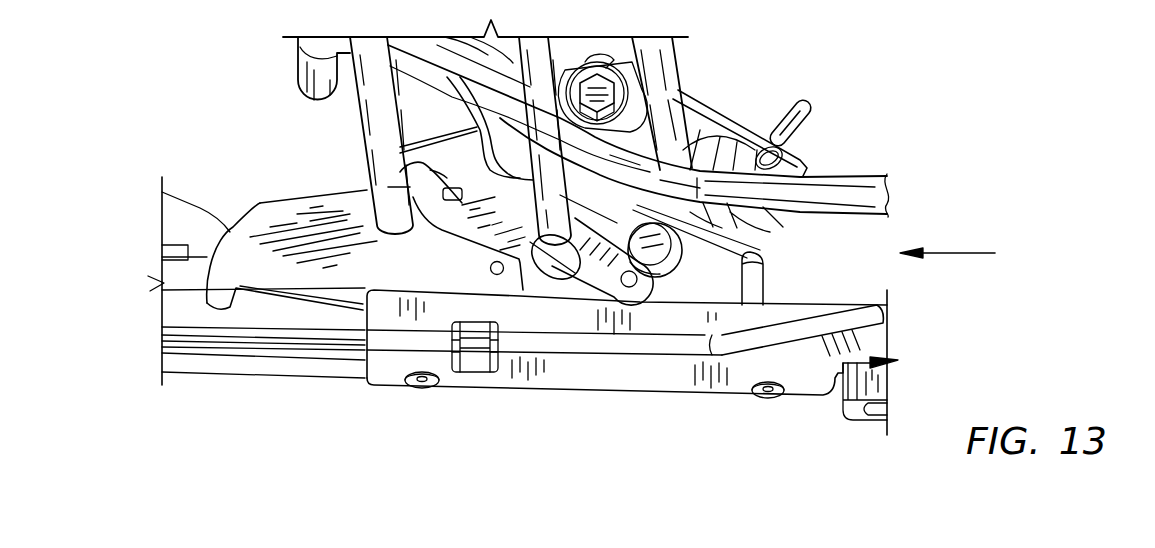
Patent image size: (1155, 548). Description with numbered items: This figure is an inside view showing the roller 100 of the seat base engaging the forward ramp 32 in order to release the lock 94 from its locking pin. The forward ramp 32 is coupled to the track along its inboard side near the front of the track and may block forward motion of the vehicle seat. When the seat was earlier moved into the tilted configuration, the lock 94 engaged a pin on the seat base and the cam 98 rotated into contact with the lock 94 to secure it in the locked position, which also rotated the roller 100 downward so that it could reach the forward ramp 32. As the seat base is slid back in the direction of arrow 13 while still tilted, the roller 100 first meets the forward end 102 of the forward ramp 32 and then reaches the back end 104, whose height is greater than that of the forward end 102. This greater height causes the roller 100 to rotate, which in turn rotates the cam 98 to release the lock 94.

The arrow 13 is at (953, 253).
The forward ramp 32 is at (610, 385).
The lock 94 is at (622, 220).
The cam 98 is at (549, 275).
The roller 100 is at (645, 280).
The forward end 102 is at (742, 343).
The back end 104 is at (563, 310).